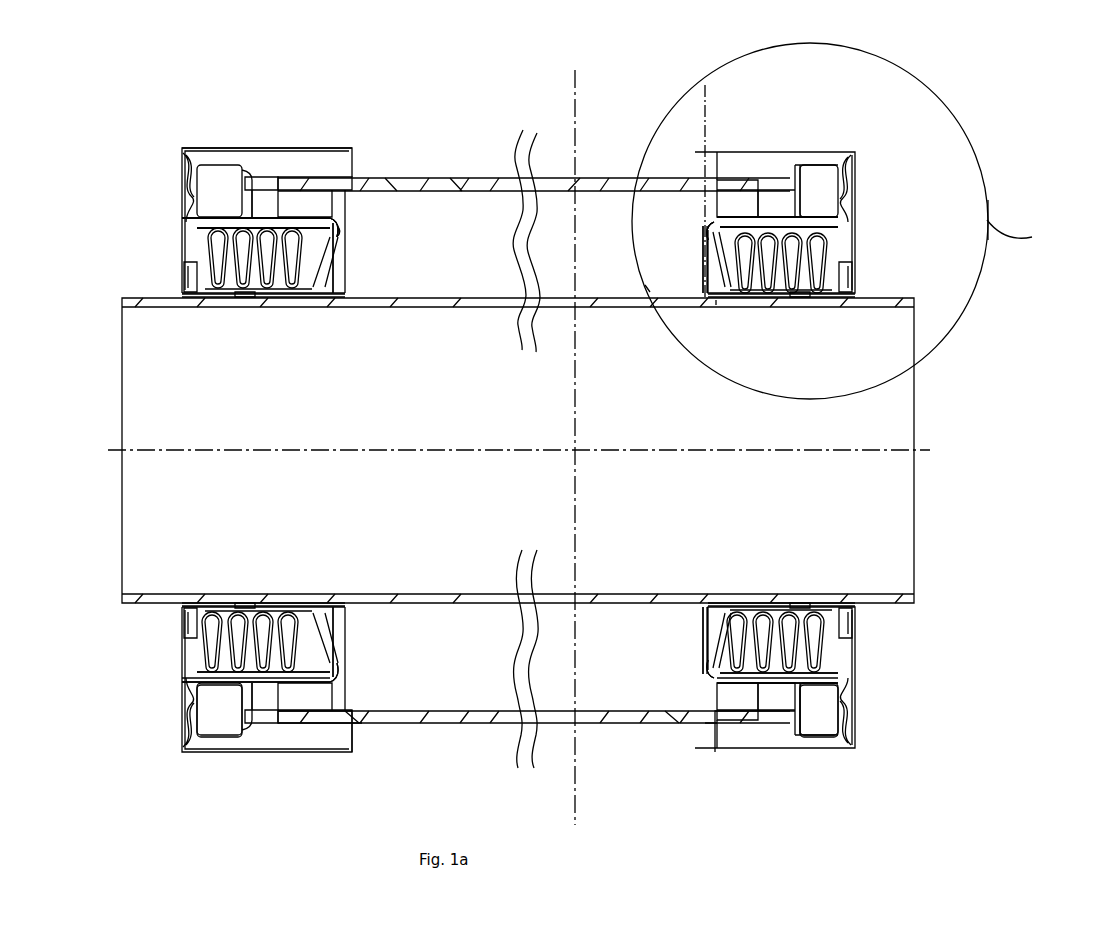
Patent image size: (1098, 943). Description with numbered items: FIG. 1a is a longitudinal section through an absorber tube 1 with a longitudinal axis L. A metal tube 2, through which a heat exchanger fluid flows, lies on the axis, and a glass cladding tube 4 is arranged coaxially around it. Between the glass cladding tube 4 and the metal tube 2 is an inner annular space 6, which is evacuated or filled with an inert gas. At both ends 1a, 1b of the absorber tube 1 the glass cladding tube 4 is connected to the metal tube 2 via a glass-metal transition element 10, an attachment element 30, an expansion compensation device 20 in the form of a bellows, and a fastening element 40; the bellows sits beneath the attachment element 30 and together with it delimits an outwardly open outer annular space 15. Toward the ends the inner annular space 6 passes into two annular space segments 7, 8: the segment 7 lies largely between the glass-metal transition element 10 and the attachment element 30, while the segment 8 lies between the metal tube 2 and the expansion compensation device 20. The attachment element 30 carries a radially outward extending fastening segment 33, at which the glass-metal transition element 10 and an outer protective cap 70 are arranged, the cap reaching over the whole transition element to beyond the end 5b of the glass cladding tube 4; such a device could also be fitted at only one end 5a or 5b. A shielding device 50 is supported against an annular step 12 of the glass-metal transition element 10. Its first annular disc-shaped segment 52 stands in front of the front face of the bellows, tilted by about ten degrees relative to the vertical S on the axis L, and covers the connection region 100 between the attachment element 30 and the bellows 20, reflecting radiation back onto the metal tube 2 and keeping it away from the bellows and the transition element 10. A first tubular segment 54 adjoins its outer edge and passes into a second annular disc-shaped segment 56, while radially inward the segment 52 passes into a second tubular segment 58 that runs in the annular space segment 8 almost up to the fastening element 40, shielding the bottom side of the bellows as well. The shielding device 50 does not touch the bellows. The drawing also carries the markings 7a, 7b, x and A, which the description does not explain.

The absorber tube 1 is at (1010, 178).
The end of the absorber tube 1a is at (135, 152).
The end of the absorber tube 1b is at (870, 81).
The metal tube 2 is at (900, 298).
The glass cladding tube 4 is at (459, 177).
The end of the glass cladding tube 5a is at (298, 195).
The end of the glass cladding tube 5b is at (745, 178).
The inner annular space 6 is at (436, 257).
The annular space segment 7 is at (294, 210).
The support plate section 7a is at (510, 228).
The flange 7b is at (203, 197).
The annular space segment 8 is at (245, 303).
The glass-metal transition element 10 is at (243, 170).
The annular step 12 is at (243, 731).
The outer annular space 15 is at (191, 226).
The expansion compensation device 20 is at (214, 241).
The attachment element 30 is at (205, 681).
The fastening segment 33 is at (857, 159).
The fastening element 40 is at (177, 292).
The shielding device 50 is at (336, 258).
The first annular disc-shaped segment 52 is at (338, 224).
The first tubular segment 54 is at (331, 229).
The second annular disc-shaped segment 56 is at (243, 185).
The second tubular segment 58 is at (210, 303).
The outer protective cap 70 is at (211, 152).
The connection region 100 is at (352, 716).
The longitudinal axis L is at (930, 450).
The vertical S is at (706, 99).
The distance x is at (1016, 223).
The section A- A is at (574, 100).